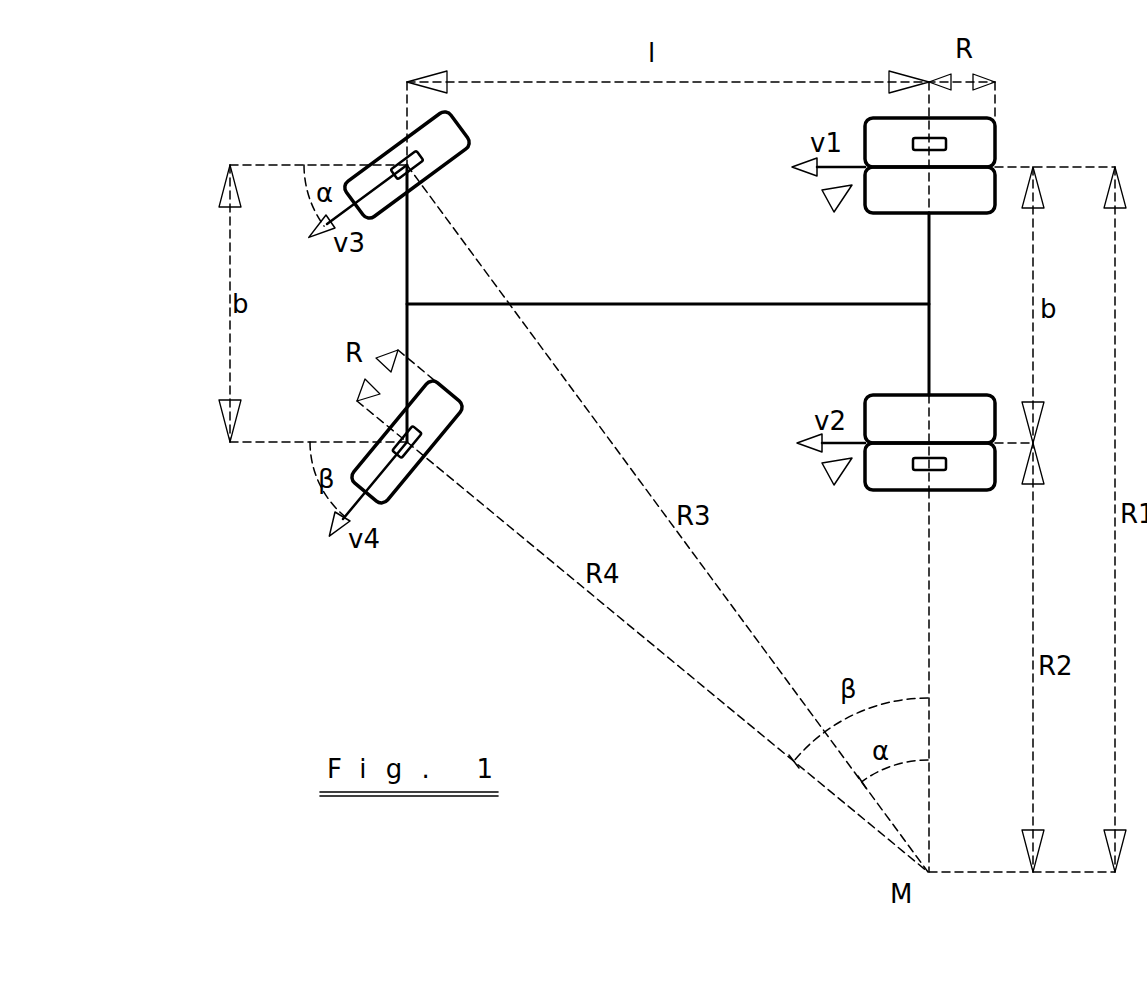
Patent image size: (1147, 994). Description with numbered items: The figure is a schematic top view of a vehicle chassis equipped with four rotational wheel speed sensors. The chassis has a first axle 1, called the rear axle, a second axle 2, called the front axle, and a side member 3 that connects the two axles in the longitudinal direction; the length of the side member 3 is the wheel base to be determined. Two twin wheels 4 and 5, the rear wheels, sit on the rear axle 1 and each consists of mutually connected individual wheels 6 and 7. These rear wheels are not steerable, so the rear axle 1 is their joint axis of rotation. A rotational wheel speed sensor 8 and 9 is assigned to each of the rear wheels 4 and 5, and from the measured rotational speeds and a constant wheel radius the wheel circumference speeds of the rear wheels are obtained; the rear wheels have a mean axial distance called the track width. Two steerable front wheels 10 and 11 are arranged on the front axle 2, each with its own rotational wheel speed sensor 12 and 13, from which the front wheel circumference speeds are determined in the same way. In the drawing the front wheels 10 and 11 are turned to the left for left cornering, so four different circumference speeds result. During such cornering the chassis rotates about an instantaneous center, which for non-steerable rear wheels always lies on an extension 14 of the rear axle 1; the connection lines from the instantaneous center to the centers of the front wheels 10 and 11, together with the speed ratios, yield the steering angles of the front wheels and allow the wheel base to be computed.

The first axle 1 is at (931, 325).
The second axle 2 is at (407, 290).
The side member 3 is at (680, 303).
The twin wheel 4 is at (828, 200).
The twin wheel 5 is at (828, 473).
The individual wheel 6 is at (965, 195).
The individual wheel 7 is at (985, 135).
The rotational wheel speed sensor 8 is at (918, 136).
The rotational wheel speed sensor 9 is at (940, 470).
The front wheel 10 is at (450, 130).
The front wheel 11 is at (385, 488).
The rotational wheel speed sensor 12 is at (400, 150).
The rotational wheel speed sensor 13 is at (420, 430).
The extension of the rear axle 14 is at (932, 622).